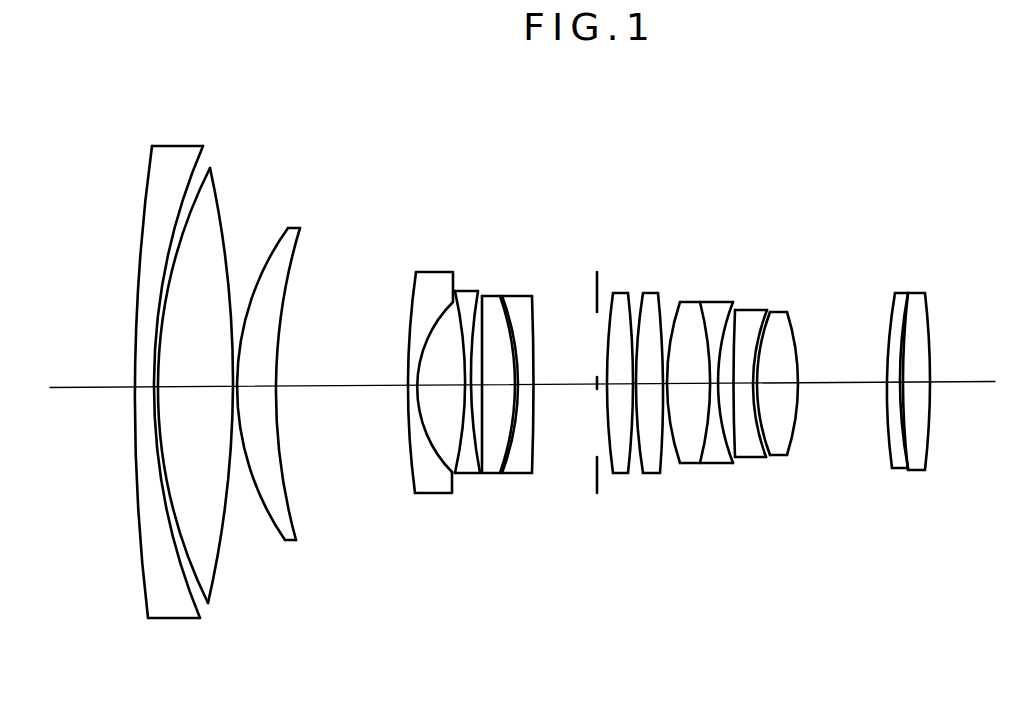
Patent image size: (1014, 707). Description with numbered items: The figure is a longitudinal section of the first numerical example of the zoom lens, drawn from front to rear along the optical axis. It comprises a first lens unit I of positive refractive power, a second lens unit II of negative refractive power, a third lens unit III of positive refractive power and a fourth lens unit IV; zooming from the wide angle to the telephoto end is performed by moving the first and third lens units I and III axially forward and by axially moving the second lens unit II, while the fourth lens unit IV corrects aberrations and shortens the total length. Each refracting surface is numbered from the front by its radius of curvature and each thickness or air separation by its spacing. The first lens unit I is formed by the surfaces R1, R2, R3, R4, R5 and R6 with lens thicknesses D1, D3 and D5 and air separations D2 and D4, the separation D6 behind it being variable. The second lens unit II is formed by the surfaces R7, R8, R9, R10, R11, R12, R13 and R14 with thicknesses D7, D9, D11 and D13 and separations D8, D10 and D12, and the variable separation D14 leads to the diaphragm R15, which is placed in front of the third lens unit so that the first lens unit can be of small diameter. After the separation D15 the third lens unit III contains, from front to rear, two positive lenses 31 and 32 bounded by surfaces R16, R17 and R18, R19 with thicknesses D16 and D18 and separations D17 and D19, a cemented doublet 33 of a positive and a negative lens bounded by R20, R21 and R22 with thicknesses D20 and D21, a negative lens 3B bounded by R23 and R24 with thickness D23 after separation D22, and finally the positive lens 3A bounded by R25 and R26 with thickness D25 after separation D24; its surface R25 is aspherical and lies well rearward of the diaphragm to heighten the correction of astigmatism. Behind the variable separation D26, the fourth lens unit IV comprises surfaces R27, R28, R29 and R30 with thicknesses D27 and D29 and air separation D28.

The first lens unit I is at (158, 86).
The second lens unit II is at (392, 86).
The third lens unit III is at (817, 86).
The fourth lens unit IV is at (853, 86).
The first lens surface R1 is at (150, 176).
The second lens surface R2 is at (183, 177).
The third lens surface R3 is at (212, 167).
The fourth lens surface R4 is at (228, 183).
The fifth lens surface R5 is at (270, 230).
The sixth lens surface R6 is at (303, 232).
The seventh lens surface R7 is at (412, 293).
The eighth lens surface R8 is at (433, 323).
The ninth lens surface R9 is at (455, 292).
The tenth lens surface R10 is at (476, 292).
The eleventh lens surface R11 is at (483, 295).
The twelfth lens surface R12 is at (504, 303).
The thirteenth lens surface R13 is at (513, 298).
The fourteenth lens surface R14 is at (532, 296).
The diaphragm R15 is at (596, 300).
The sixteenth lens surface R16 is at (612, 290).
The seventeenth lens surface R17 is at (630, 294).
The eighteenth lens surface R18 is at (644, 294).
The nineteenth lens surface R19 is at (658, 294).
The twentieth lens surface R20 is at (680, 302).
The twenty-first lens surface R21 is at (700, 303).
The twenty-second lens surface R22 is at (731, 305).
The twenty-third lens surface R23 is at (736, 310).
The twenty-fourth lens surface R24 is at (765, 312).
The twenty-fifth lens surface R25 is at (771, 313).
The twenty-sixth lens surface R26 is at (789, 314).
The twenty-seventh lens surface R27 is at (890, 315).
The twenty-eighth lens surface R28 is at (916, 294).
The twenty-ninth lens surface R29 is at (905, 294).
The thirtieth lens surface R30 is at (927, 294).
The first lens thickness D1 is at (143, 385).
The second air separation D2 is at (162, 385).
The third lens thickness D3 is at (190, 385).
The fourth air separation D4 is at (238, 386).
The fifth lens thickness D5 is at (257, 385).
The sixth air separation D6 is at (302, 385).
The seventh lens thickness D7 is at (407, 415).
The eighth air separation D8 is at (412, 400).
The ninth lens thickness D9 is at (440, 400).
The tenth air separation D10 is at (466, 400).
The eleventh lens thickness D11 is at (477, 400).
The twelfth air separation D12 is at (490, 388).
The thirteenth lens thickness D13 is at (515, 400).
The fourteenth air separation D14 is at (545, 390).
The fifteenth air separation D15 is at (592, 393).
The sixteenth lens thickness D16 is at (618, 400).
The seventeenth air separation D17 is at (634, 400).
The eighteenth lens thickness D18 is at (650, 400).
The nineteenth air separation D19 is at (665, 400).
The twentieth lens thickness D20 is at (688, 400).
The twenty-first lens thickness D21 is at (713, 400).
The twenty-second air separation D22 is at (727, 400).
The twenty-third lens thickness D23 is at (745, 400).
The twenty-fourth air separation D24 is at (756, 400).
The twenty-fifth lens thickness D25 is at (778, 400).
The twenty-sixth air separation D26 is at (845, 385).
The twenty-seventh lens thickness D27 is at (893, 390).
The twenty-eighth air separation D28 is at (913, 393).
The twenty-ninth lens thickness D29 is at (933, 393).
The positive lens 31 is at (607, 365).
The positive lens 32 is at (648, 365).
The cemented doublet 33 is at (698, 368).
The negative lens 3B is at (752, 365).
The aspherical positive lens 3A is at (785, 365).